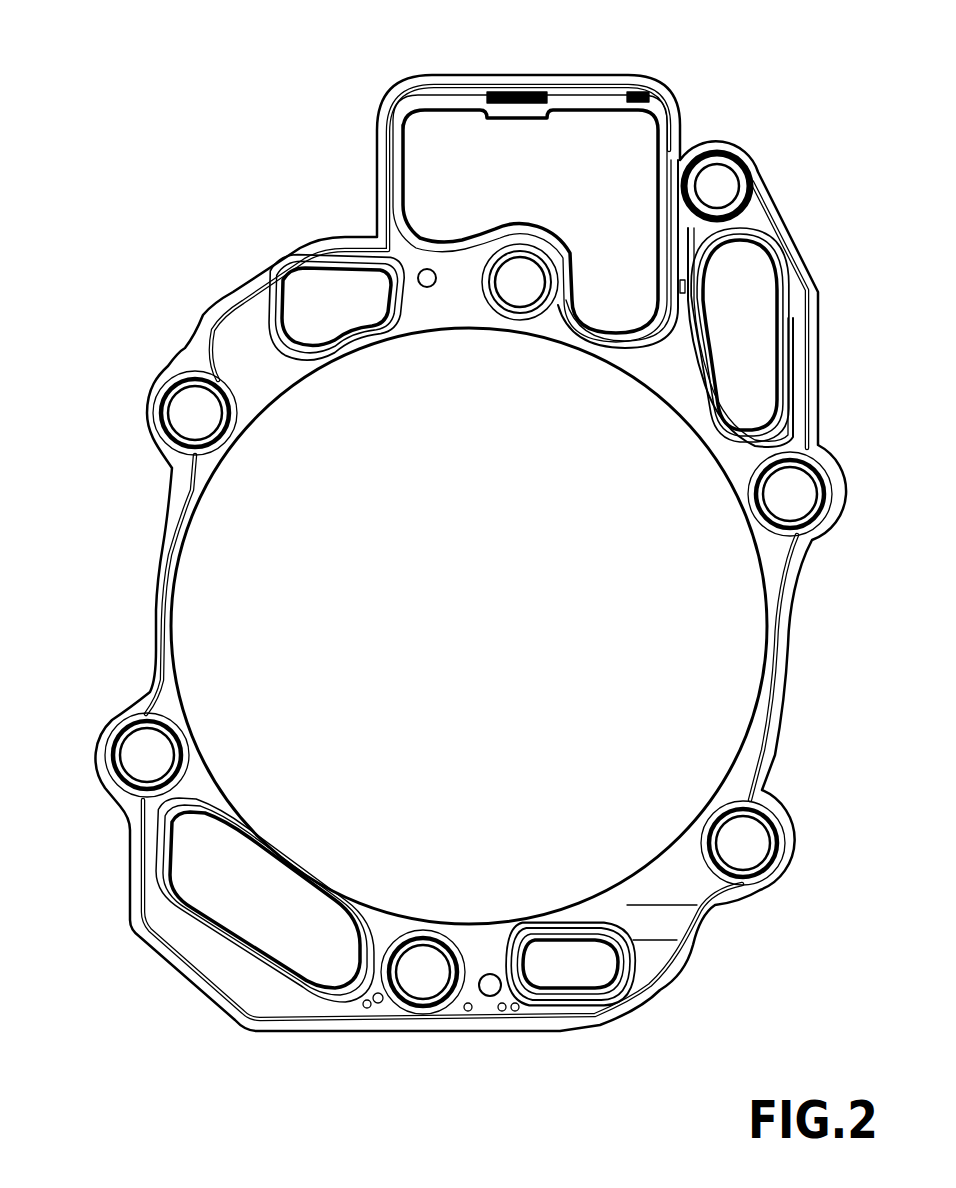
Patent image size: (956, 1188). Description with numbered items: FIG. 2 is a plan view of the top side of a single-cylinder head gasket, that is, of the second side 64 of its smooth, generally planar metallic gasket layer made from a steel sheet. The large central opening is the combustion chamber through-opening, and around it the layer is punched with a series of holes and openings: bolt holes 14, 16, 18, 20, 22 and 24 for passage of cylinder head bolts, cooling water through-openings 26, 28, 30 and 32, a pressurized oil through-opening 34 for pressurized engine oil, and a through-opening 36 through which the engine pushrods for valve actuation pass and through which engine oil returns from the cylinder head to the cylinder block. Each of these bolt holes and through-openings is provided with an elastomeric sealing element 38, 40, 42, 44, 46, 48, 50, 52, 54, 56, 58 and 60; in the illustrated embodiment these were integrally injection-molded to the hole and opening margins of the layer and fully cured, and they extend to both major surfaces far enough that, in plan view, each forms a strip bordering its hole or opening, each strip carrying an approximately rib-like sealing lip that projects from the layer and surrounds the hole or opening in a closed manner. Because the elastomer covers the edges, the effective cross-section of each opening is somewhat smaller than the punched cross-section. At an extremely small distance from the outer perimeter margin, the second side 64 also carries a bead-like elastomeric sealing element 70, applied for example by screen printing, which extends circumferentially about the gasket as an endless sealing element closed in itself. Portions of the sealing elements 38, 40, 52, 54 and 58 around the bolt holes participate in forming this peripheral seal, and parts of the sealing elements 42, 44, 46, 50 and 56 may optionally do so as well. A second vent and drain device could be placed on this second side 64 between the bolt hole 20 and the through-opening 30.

The bolt hole 14 is at (752, 860).
The bolt hole 16 is at (800, 508).
The bolt hole 18 is at (530, 280).
The bolt hole 20 is at (210, 415).
The bolt hole 22 is at (157, 752).
The bolt hole 24 is at (418, 985).
The cooling water through-opening 26 is at (585, 965).
The cooling water through-opening 28 is at (750, 355).
The cooling water through-opening 30 is at (355, 283).
The cooling water through-opening 32 is at (282, 915).
The pressurized oil through-opening 34 is at (725, 188).
The through-opening 36 is at (570, 135).
The elastomeric sealing element 38 is at (770, 830).
The elastomeric sealing element 40 is at (815, 480).
The elastomeric sealing element 42 is at (710, 410).
The elastomeric sealing element 44 is at (712, 148).
The elastomeric sealing element 46 is at (425, 242).
The elastomeric sealing element 48 is at (512, 320).
The elastomeric sealing element 50 is at (268, 326).
The elastomeric sealing element 52 is at (165, 413).
The elastomeric sealing element 54 is at (110, 758).
The elastomeric sealing element 56 is at (238, 828).
The elastomeric sealing element 58 is at (422, 940).
The elastomeric sealing element 60 is at (588, 920).
The second side 64 is at (265, 385).
The bead-like elastomeric sealing element 70 is at (780, 627).